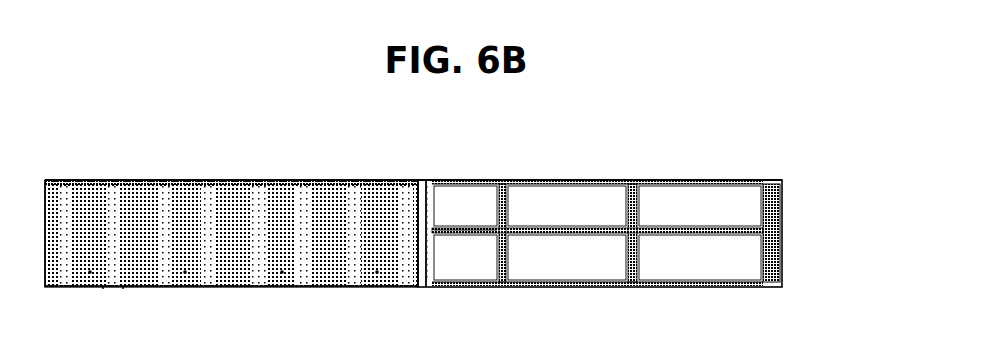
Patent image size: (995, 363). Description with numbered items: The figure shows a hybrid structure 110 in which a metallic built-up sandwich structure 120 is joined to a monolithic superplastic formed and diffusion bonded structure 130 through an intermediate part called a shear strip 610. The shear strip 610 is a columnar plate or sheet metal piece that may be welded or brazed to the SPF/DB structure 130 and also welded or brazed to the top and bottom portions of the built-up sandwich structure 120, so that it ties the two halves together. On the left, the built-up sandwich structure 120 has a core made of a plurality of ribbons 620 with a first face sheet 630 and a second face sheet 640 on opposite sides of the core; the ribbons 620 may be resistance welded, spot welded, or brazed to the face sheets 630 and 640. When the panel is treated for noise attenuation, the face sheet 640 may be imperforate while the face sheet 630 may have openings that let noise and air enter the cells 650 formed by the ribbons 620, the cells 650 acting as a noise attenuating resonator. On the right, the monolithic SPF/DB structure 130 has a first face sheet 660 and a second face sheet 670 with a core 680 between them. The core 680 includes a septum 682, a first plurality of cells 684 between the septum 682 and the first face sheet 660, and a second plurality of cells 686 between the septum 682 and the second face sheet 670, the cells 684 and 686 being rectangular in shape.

The hybrid structure 110 is at (653, 93).
The built-up sandwich structure 120 is at (151, 174).
The monolithic SPF/DB structure 130 is at (777, 172).
The shear strip 610 is at (421, 179).
The ribbons 620 is at (90, 250).
The first face sheet 630 is at (273, 288).
The second face sheet 640 is at (255, 179).
The cells 650 is at (123, 288).
The first face sheet 660 is at (517, 179).
The second face sheet 670 is at (720, 287).
The core 680 is at (789, 187).
The septum 682 is at (456, 234).
The first plurality of cells 684 is at (683, 211).
The second plurality of cells 686 is at (580, 265).